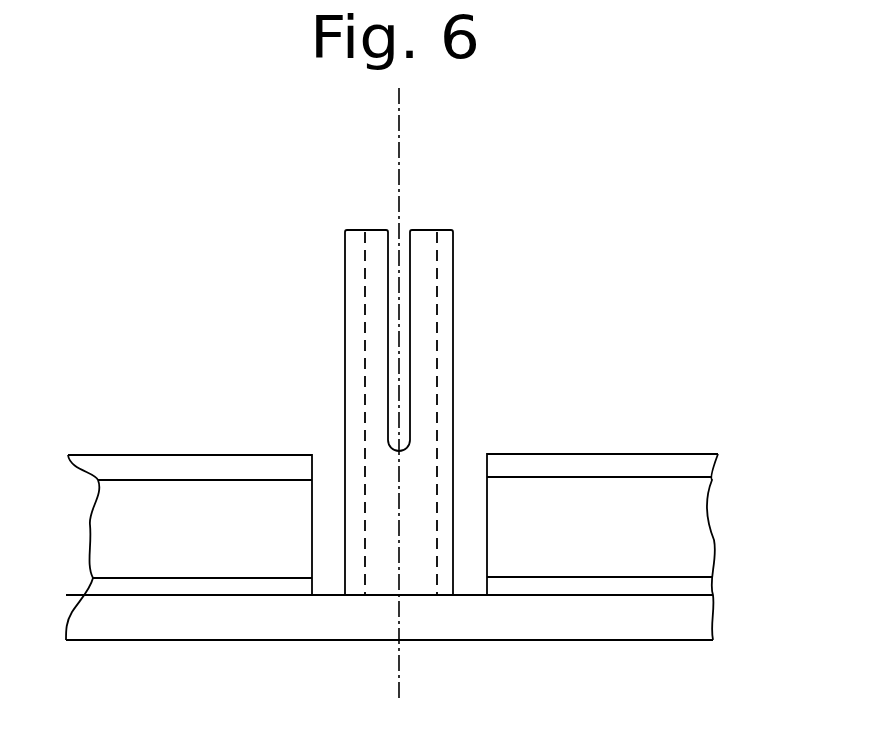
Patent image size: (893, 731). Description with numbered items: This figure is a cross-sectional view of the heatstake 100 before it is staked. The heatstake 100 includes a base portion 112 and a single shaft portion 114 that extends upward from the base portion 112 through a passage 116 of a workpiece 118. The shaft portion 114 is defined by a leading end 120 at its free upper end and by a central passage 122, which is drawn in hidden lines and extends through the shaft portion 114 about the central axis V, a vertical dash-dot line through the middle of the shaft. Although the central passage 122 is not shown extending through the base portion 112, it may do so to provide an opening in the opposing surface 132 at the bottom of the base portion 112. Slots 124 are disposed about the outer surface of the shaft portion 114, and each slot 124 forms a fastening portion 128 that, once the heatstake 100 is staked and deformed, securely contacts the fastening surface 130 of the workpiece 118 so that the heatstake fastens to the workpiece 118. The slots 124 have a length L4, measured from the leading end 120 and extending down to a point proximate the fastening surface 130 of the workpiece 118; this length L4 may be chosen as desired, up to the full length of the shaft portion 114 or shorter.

The heatstake 100 is at (291, 188).
The base portion 112 is at (227, 624).
The shaft portion 114 is at (459, 243).
The passage 116 is at (460, 460).
The workpiece 118 is at (716, 524).
The leading end 120 is at (350, 228).
The central passage 122 is at (372, 277).
The slots 124 is at (399, 325).
The fastening portion 128 is at (355, 402).
The fastening surface 130 is at (560, 455).
The opposing surface 132 is at (505, 640).
The central axis V is at (399, 137).
The length of the slots L4 is at (308, 230).